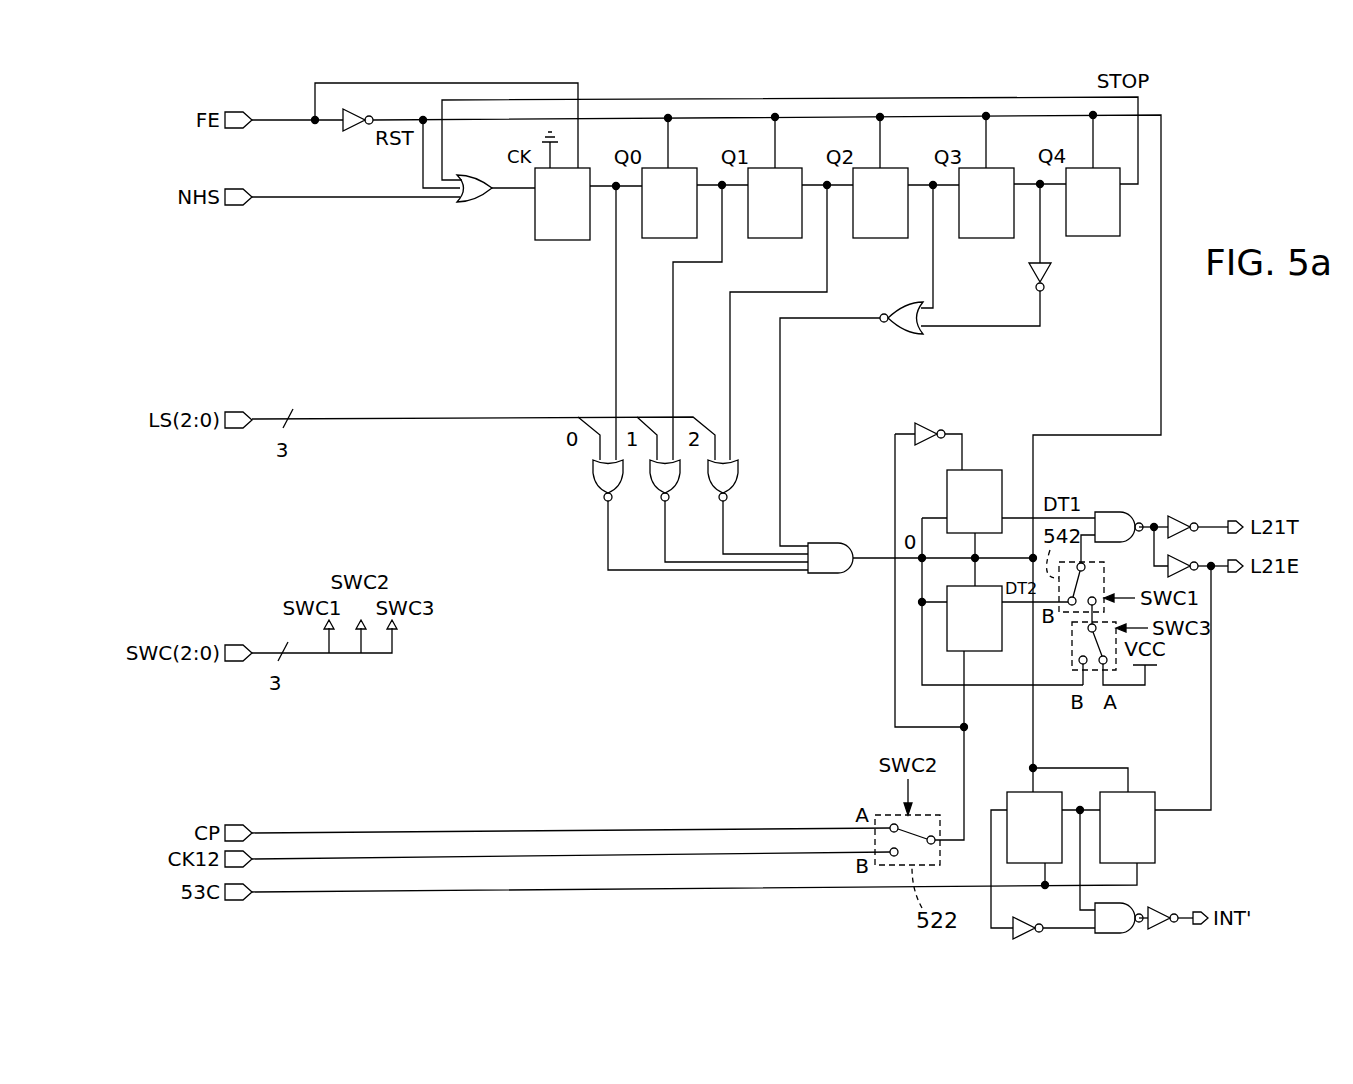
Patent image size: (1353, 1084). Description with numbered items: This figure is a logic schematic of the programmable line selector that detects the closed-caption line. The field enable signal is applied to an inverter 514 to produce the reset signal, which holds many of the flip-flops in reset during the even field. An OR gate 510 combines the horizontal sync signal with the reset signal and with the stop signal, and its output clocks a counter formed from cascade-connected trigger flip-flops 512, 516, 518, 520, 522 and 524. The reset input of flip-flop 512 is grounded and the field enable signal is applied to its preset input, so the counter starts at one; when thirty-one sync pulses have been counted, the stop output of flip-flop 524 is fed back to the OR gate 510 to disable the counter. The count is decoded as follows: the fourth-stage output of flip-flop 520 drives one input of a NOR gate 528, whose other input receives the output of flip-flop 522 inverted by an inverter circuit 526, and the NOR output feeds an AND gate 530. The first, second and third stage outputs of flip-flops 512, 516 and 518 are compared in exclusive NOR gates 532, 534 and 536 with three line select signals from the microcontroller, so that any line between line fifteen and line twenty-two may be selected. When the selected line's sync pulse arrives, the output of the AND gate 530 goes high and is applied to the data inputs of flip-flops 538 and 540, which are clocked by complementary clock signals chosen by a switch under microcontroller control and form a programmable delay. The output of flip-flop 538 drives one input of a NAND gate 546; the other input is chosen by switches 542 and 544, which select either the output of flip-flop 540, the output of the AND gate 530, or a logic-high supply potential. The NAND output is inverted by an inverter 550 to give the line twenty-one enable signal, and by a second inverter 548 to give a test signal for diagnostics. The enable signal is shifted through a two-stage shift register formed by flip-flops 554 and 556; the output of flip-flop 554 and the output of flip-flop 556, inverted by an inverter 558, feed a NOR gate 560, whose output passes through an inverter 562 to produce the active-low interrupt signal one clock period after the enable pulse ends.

The OR gate 510 is at (474, 203).
The trigger flip-flop 512 is at (575, 240).
The inverter 514 is at (351, 132).
The trigger flip-flop 516 is at (678, 238).
The trigger flip-flop 518 is at (795, 238).
The trigger flip-flop 520 is at (893, 238).
The trigger flip-flop 522 is at (995, 238).
The trigger flip-flop 524 is at (1086, 236).
The inverter circuit 526 is at (1048, 275).
The NOR gate 528 is at (910, 334).
The AND gate 530 is at (832, 543).
The exclusive NOR gate 532 is at (592, 478).
The exclusive NOR gate 534 is at (657, 482).
The exclusive NOR gate 536 is at (715, 482).
The flip-flop 538 is at (985, 470).
The flip-flop 540 is at (975, 651).
The switch 542 is at (928, 421).
The switch 544 is at (1095, 673).
The NAND gate 546 is at (1122, 512).
The inverter 548 is at (1183, 516).
The inverter 550 is at (1185, 579).
The flip-flop 554 is at (1145, 792).
The flip-flop 556 is at (1017, 792).
The inverter 558 is at (1028, 920).
The NOR gate 560 is at (1133, 905).
The inverter 562 is at (1166, 912).